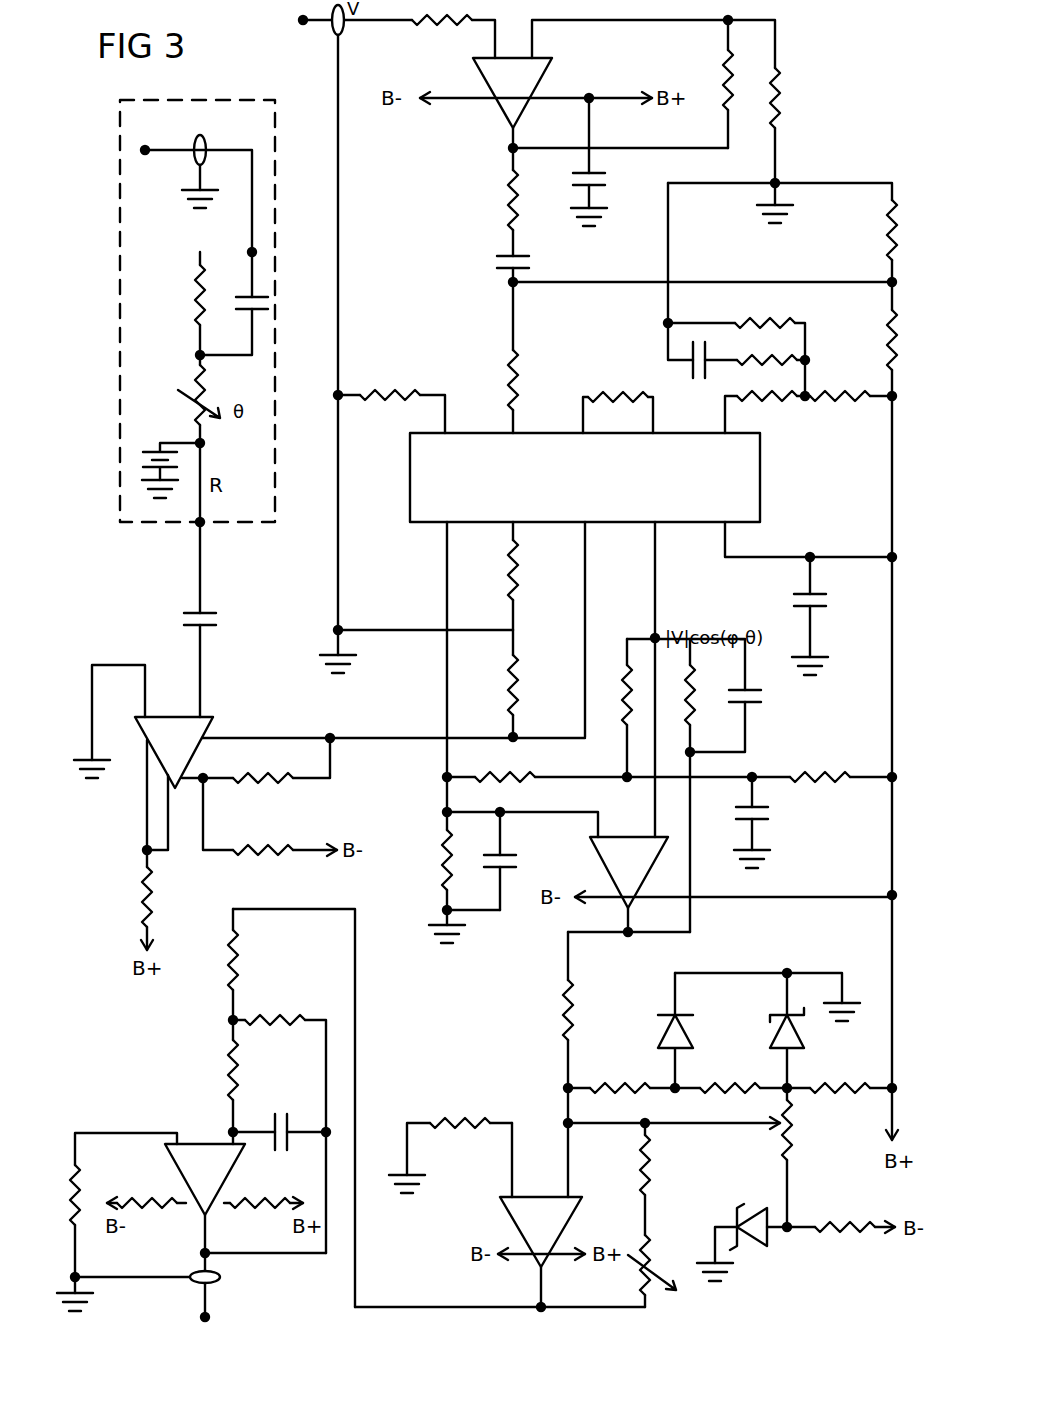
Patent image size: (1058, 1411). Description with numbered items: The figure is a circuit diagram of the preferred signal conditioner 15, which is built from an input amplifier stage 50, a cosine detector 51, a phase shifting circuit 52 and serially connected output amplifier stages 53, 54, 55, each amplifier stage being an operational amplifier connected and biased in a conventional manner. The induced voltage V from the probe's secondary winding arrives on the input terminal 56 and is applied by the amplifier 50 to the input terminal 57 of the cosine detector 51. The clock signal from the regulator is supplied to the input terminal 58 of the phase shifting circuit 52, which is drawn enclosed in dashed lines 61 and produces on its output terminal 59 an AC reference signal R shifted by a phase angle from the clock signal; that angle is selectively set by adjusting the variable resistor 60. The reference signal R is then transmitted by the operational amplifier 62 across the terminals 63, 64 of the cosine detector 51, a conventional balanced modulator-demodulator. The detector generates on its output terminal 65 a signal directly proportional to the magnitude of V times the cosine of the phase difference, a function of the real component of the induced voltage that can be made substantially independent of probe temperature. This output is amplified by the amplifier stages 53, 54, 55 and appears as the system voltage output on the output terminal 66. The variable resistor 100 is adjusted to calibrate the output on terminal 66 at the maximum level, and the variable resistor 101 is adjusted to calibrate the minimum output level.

The signal conditioner 15 is at (430, 257).
The input amplifier stage 50 is at (527, 98).
The cosine detector 51 is at (592, 494).
The phase shifting circuit 52 is at (163, 290).
The output amplifier stage 53 is at (640, 880).
The output amplifier stage 54 is at (553, 1240).
The output amplifier stage 55 is at (218, 1188).
The input terminal 56 is at (301, 22).
The input terminal of cosine detector 57 is at (511, 430).
The input terminal of phase shifting circuit 58 is at (150, 133).
The output terminal of phase shifting circuit 59 is at (204, 528).
The variable resistor 60 is at (207, 392).
The dashed lines 61 is at (118, 300).
The operational amplifier 62 is at (186, 758).
The terminal of cosine detector 63 is at (586, 535).
The terminal of cosine detector 64 is at (515, 537).
The output terminal of cosine detector 65 is at (655, 535).
The output terminal 66 is at (208, 1318).
The variable resistor 100 is at (655, 1300).
The variable resistor 101 is at (795, 1130).